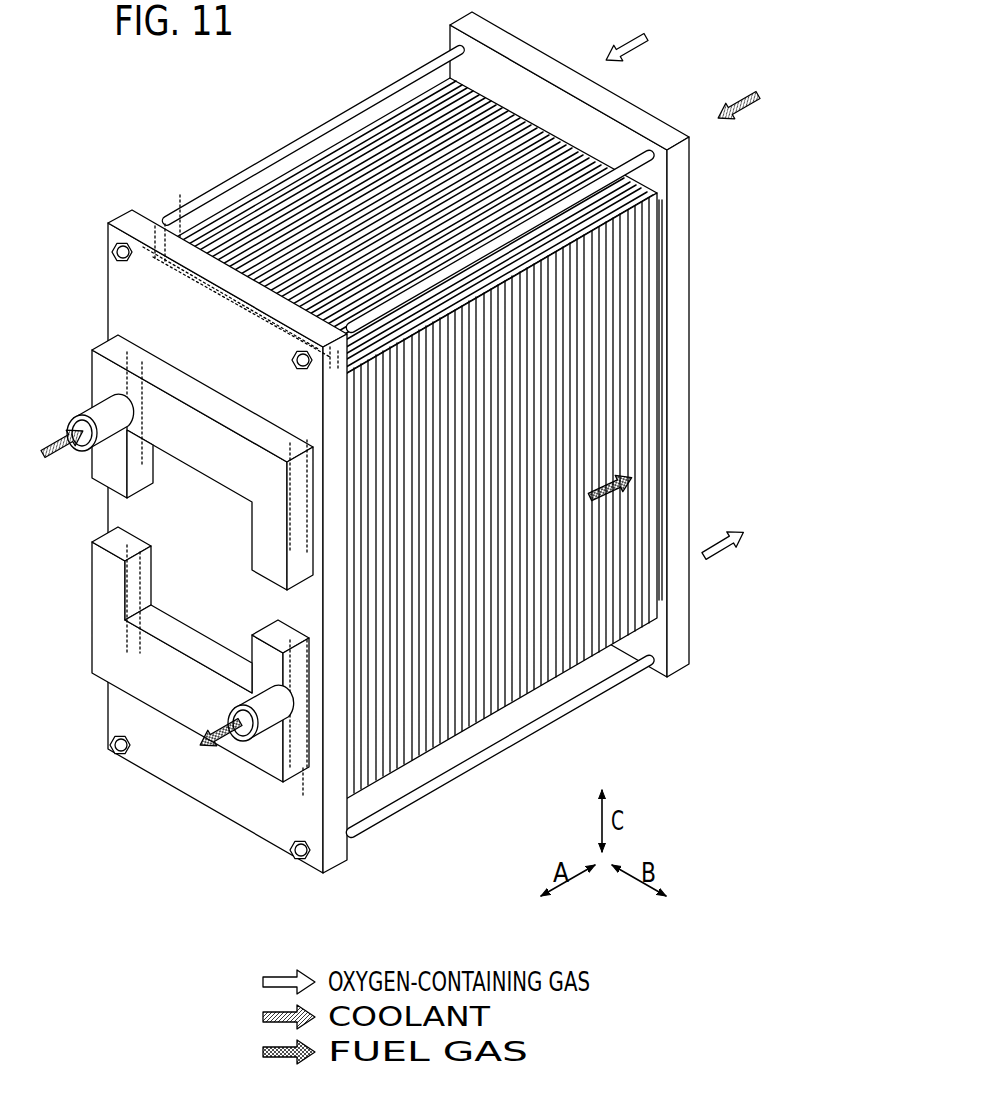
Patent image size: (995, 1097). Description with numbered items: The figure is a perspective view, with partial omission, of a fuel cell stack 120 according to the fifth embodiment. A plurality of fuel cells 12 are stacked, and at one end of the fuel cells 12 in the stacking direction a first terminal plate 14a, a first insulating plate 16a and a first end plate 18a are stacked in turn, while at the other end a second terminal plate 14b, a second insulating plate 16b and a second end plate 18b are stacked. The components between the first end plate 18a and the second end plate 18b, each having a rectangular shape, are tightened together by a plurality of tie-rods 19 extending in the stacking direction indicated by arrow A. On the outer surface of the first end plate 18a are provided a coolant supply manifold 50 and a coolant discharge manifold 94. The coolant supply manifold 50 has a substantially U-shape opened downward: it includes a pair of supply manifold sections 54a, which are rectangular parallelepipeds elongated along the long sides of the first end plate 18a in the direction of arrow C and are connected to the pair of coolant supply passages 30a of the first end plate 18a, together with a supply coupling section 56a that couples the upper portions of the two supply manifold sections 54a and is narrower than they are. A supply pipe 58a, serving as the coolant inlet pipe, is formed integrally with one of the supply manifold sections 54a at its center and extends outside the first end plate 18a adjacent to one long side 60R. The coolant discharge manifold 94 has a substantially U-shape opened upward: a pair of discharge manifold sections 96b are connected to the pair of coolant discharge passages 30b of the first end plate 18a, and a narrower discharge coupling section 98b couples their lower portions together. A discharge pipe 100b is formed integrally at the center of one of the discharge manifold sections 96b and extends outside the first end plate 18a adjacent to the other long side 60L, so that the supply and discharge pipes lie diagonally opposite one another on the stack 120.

The fuel cell stack 120 is at (250, 83).
The fuel cells 12 is at (283, 170).
The first terminal plate 14a is at (245, 268).
The second terminal plate 14b is at (648, 277).
The first insulating plate 16a is at (225, 264).
The second insulating plate 16b is at (657, 250).
The first end plate 18a is at (117, 212).
The second end plate 18b is at (542, 64).
The tie-rods 19 is at (378, 100).
The coolant supply manifold 50 is at (171, 452).
The coolant supply passages 30a is at (127, 382).
The supply manifold sections 54a is at (102, 392).
The supply coupling section 56a is at (197, 427).
The supply pipe 58a is at (85, 458).
The coolant discharge manifold 94 is at (175, 664).
The coolant discharge passages 30b is at (147, 570).
The discharge manifold sections 96b is at (103, 594).
The discharge coupling section 98b is at (177, 667).
The discharge pipe 100b is at (237, 695).
The one long side 60R is at (107, 717).
The other long side 60L is at (337, 853).